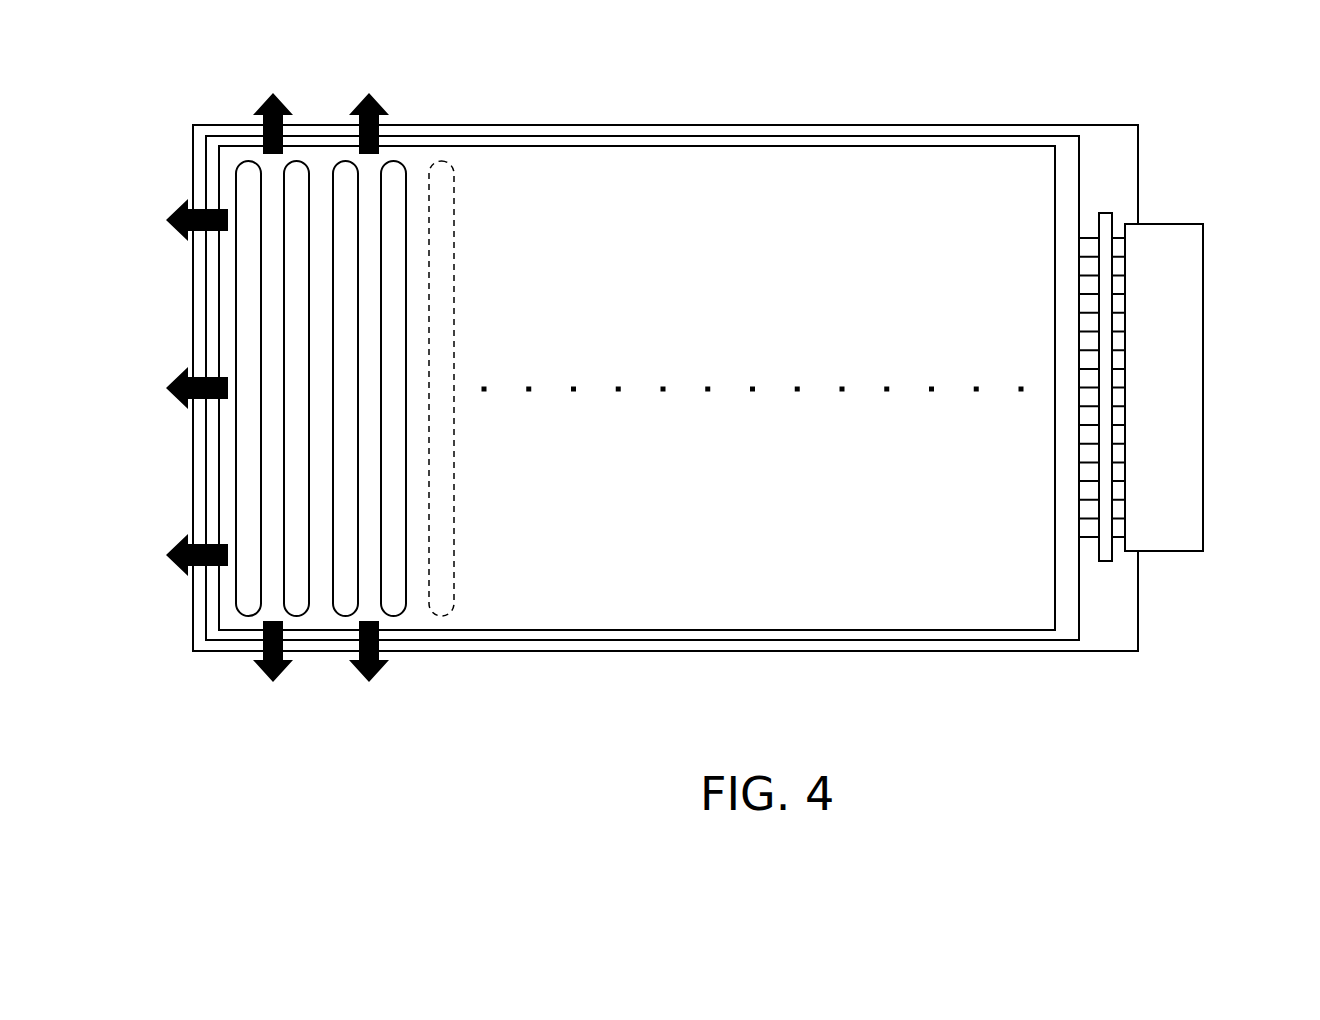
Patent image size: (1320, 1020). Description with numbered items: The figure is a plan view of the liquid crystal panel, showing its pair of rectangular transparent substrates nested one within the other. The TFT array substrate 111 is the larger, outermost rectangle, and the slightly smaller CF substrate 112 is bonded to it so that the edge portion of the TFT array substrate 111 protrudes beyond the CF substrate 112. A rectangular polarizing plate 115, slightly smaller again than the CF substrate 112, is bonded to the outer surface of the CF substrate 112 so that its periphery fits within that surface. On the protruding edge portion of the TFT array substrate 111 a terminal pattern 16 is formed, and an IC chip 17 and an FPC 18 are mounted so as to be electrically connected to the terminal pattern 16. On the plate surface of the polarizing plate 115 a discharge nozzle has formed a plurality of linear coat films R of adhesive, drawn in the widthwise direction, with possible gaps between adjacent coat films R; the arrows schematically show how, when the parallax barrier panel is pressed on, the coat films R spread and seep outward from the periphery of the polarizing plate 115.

The TFT array substrate 111 is at (587, 127).
The CF substrate 112 is at (715, 140).
The polarizing plate 115 is at (878, 153).
The linear coat film R is at (345, 168).
The terminal pattern 16 is at (1087, 235).
The IC chip 17 is at (1107, 213).
The FPC 18 is at (1178, 230).